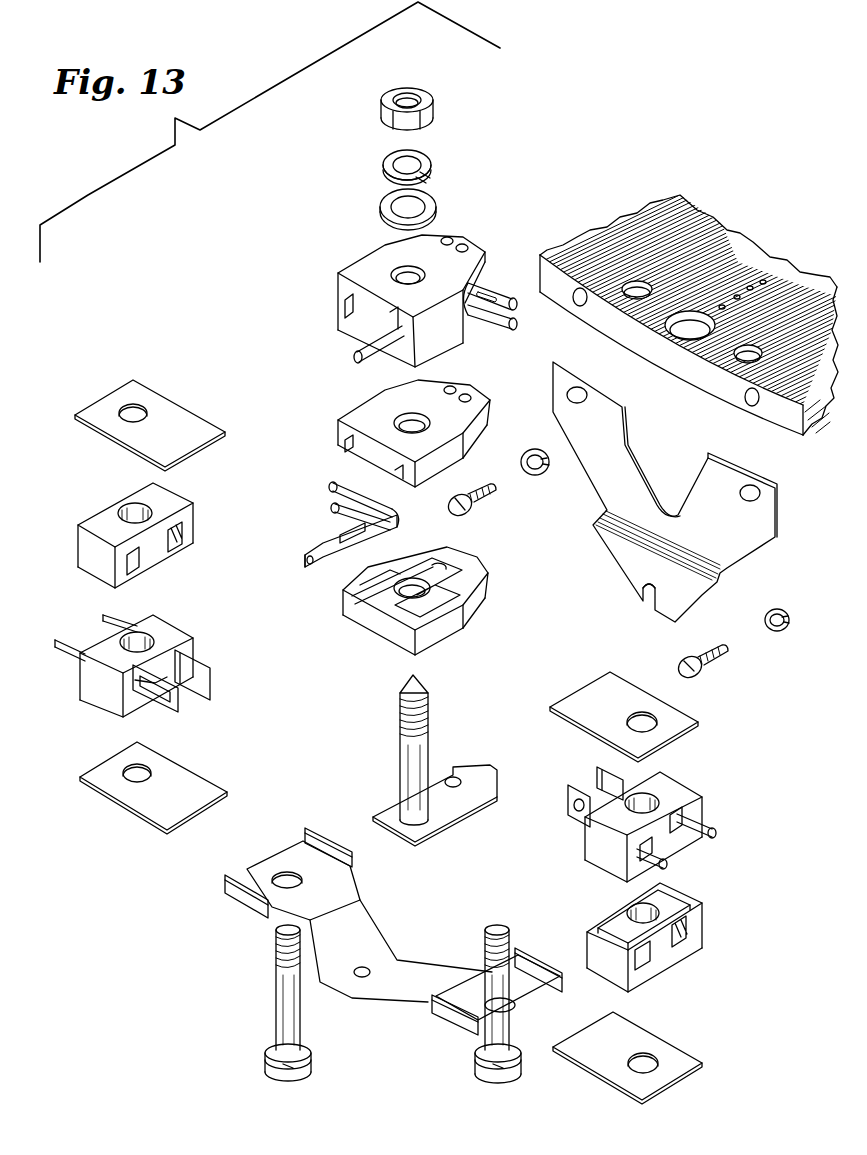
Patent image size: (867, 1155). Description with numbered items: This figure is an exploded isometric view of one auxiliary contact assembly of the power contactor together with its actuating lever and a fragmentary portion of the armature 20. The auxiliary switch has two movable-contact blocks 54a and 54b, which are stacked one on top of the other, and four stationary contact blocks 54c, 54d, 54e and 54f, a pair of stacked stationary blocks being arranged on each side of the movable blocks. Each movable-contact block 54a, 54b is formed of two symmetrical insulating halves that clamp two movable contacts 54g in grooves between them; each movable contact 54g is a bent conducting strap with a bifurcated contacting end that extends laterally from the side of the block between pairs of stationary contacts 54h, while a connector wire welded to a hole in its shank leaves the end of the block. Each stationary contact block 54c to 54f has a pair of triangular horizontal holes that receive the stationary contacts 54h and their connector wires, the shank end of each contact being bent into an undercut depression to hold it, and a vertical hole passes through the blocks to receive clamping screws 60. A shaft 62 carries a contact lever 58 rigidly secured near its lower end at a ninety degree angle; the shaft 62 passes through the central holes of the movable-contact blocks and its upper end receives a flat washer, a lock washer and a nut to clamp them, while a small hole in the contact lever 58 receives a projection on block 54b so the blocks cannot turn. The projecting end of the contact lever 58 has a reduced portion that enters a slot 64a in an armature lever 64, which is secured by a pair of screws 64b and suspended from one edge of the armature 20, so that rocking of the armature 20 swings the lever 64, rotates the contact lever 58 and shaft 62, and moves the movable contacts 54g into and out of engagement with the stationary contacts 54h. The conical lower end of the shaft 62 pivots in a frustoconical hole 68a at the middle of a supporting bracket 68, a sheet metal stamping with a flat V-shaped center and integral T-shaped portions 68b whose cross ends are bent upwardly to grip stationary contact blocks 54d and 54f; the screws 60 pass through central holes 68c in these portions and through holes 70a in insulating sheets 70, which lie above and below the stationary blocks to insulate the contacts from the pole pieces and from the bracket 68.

The armature 20 is at (627, 328).
The movable-contact block 54a is at (358, 266).
The movable-contact block 54b is at (475, 408).
The stationary contact block 54c is at (98, 523).
The stationary contact block 54d is at (102, 692).
The stationary contact block 54e is at (678, 790).
The stationary contact block 54f is at (698, 932).
The movable contact 54g is at (480, 298).
The stationary contact 54h is at (192, 710).
The contact lever 58 is at (460, 803).
The clamping screw 60 is at (283, 1007).
The shaft 62 is at (407, 758).
The armature lever 64 is at (635, 490).
The slot 64a is at (647, 605).
The screw 64b is at (482, 503).
The supporting bracket 68 is at (410, 934).
The frustoconical hole 68a is at (363, 968).
The T-shaped portion 68b is at (320, 873).
The central hole 68c is at (282, 873).
The insulating sheet 70 is at (195, 417).
The hole 70a is at (143, 410).